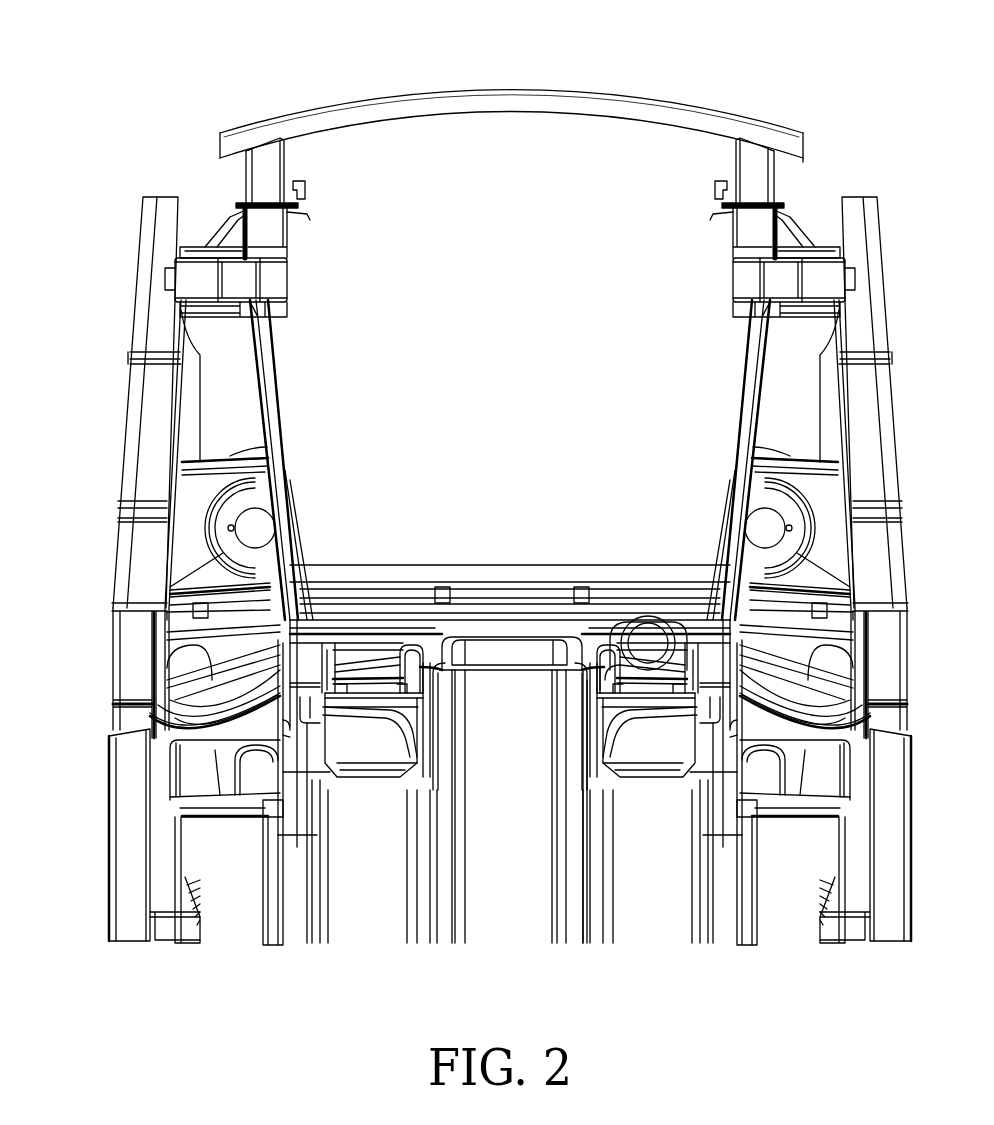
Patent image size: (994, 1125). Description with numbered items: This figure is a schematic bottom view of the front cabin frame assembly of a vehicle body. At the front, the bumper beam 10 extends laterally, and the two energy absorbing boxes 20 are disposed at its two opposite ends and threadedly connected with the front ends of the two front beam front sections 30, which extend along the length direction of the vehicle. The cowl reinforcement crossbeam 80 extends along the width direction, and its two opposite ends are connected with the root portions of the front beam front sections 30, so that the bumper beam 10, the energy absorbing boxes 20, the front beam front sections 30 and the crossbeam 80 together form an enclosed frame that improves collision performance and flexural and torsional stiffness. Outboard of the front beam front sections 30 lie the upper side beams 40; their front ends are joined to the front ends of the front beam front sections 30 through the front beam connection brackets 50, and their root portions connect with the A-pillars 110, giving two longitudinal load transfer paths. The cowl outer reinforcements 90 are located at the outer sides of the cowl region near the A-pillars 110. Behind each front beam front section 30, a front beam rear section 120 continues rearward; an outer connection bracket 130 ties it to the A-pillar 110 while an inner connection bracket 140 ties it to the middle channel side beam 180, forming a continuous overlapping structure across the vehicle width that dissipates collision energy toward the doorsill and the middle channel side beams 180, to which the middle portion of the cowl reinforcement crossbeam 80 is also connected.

The bumper beam 10 is at (490, 100).
The energy absorbing box 20 is at (256, 152).
The front beam front section 30 is at (247, 455).
The upper side beam 40 is at (143, 390).
The front beam connection bracket 50 is at (192, 272).
The cowl reinforcement crossbeam 80 is at (487, 623).
The cowl outer reinforcement 90 is at (167, 697).
The A-pillar 110 is at (123, 808).
The front beam rear section 120 is at (293, 908).
The outer connection bracket 130 is at (215, 808).
The inner connection bracket 140 is at (368, 732).
The middle channel side beam 180 is at (430, 850).